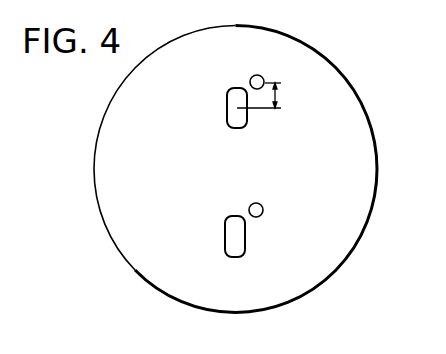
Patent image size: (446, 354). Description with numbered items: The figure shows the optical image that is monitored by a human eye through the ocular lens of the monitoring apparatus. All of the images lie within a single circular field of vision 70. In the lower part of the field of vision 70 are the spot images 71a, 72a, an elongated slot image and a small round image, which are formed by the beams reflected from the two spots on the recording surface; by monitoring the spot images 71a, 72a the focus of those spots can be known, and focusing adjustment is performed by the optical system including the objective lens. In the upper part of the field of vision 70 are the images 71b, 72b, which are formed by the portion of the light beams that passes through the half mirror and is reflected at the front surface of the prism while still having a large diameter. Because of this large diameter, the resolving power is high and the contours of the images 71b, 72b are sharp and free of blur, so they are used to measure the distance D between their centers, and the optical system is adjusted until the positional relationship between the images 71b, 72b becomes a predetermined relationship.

The field of vision 70 is at (356, 92).
The spot image 71a is at (226, 240).
The image 71b is at (227, 115).
The spot image 72a is at (264, 207).
The image 72b is at (255, 75).
The distance D is at (266, 96).